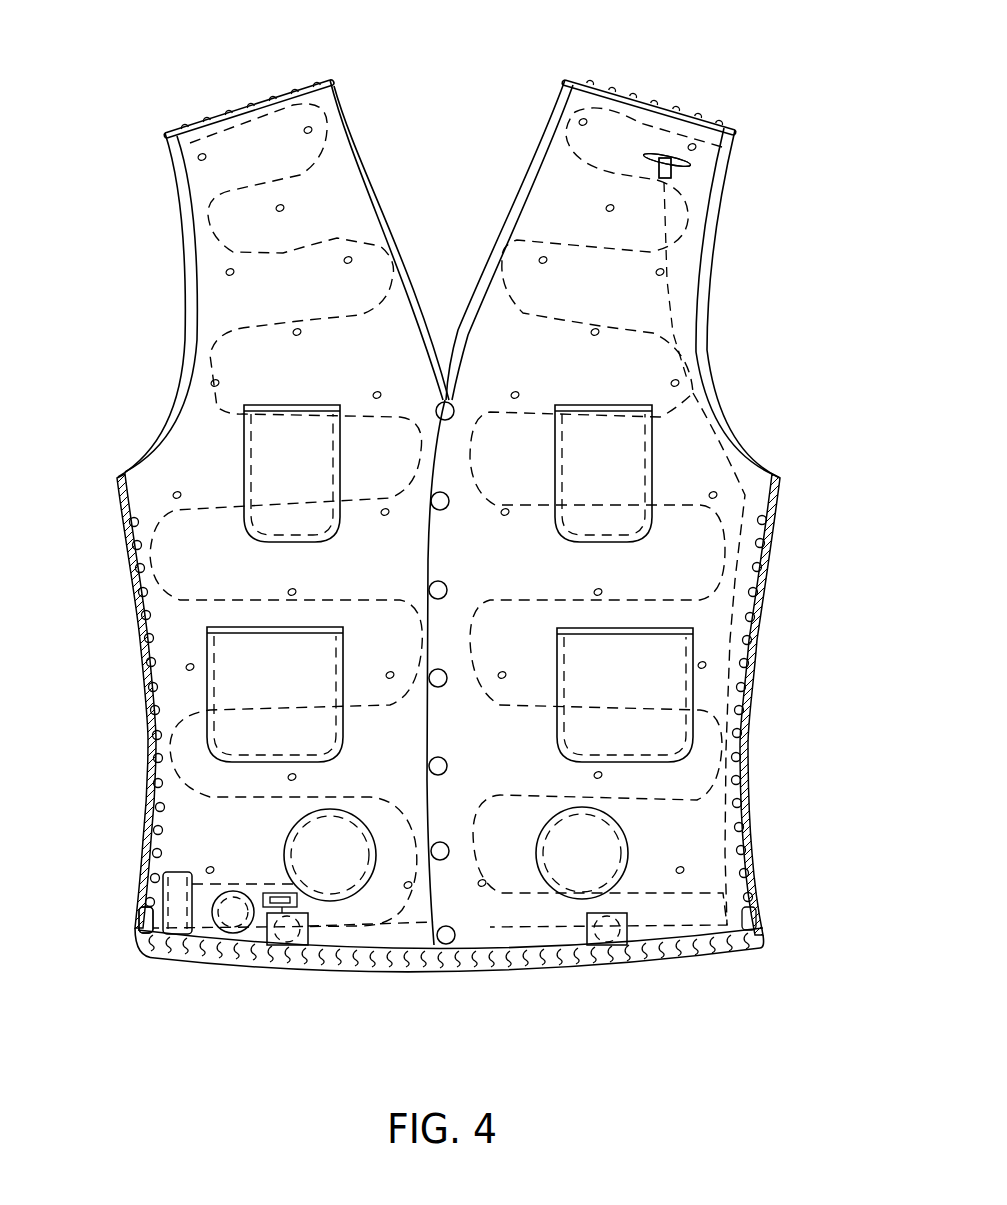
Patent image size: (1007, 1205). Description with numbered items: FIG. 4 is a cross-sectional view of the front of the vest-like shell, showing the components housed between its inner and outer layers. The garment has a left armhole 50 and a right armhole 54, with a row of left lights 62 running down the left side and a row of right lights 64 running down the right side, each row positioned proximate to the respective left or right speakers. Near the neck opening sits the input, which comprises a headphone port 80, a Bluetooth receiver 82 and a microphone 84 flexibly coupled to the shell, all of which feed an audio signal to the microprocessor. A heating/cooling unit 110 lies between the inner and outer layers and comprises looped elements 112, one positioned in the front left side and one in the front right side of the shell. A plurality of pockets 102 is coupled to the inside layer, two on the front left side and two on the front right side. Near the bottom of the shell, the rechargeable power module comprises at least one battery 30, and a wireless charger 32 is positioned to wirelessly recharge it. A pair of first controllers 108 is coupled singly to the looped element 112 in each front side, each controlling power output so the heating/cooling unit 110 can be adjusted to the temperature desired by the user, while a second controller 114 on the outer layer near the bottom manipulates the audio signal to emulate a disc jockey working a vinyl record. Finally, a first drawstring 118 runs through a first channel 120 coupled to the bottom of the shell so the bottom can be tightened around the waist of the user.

The battery 30 is at (127, 912).
The wireless charger 32 is at (175, 930).
The left armhole 50 is at (170, 322).
The right armhole 54 is at (727, 288).
The row of left lights 62 is at (142, 736).
The row of right lights 64 is at (762, 666).
The headphone port 80 is at (668, 143).
The Bluetooth receiver 82 is at (693, 179).
The microphone 84 is at (686, 193).
The pockets 102 is at (300, 670).
The first controller 108 is at (284, 950).
The heating/cooling unit 110 is at (493, 254).
The looped elements 112 is at (334, 328).
The second controller 114 is at (233, 938).
The first drawstring 118 is at (490, 982).
The first channel 120 is at (557, 982).